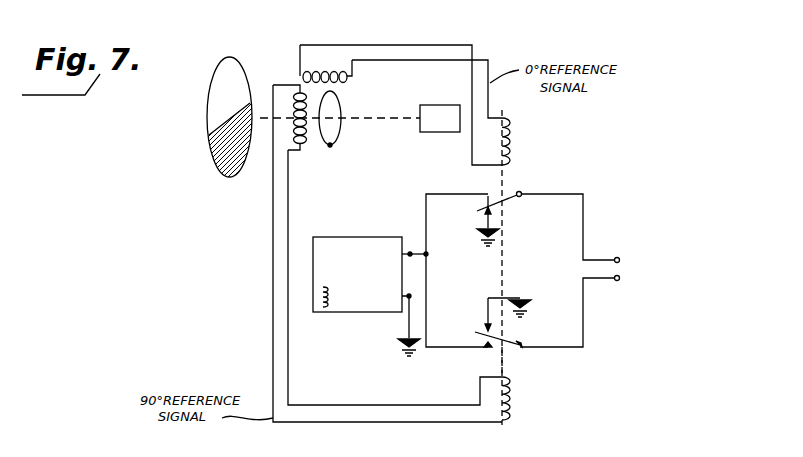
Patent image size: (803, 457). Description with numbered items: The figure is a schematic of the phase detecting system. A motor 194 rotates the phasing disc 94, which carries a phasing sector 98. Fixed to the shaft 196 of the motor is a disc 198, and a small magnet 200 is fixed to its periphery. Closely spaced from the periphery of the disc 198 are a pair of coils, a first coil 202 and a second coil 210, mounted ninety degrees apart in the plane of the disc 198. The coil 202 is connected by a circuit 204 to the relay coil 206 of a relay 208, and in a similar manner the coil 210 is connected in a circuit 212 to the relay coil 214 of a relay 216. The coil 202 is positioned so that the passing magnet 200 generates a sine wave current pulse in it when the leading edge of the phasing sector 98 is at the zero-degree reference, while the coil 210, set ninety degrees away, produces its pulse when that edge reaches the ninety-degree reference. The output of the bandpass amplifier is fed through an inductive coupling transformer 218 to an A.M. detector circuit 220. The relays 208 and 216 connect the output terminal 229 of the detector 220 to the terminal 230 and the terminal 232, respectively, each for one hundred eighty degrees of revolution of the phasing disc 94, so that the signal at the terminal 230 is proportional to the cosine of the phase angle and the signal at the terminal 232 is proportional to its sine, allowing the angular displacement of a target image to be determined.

The phasing disc 94 is at (238, 74).
The phasing sector 98 is at (218, 170).
The shaft 196 is at (262, 125).
The second coil 210 is at (305, 150).
The circuit 212 is at (289, 379).
The disc 198 is at (338, 105).
The small magnet 200 is at (330, 146).
The motor 194 is at (431, 132).
The coil 202 is at (326, 64).
The circuit 204 is at (428, 45).
The relay coil 206 is at (511, 142).
The relay 208 is at (505, 169).
The A.M. detector circuit 220 is at (347, 312).
The inductive coupling transformer 218 is at (331, 294).
The output terminal 229 is at (410, 250).
The terminal 230 is at (620, 258).
The terminal 232 is at (620, 278).
The relay coil 214 is at (511, 400).
The relay 216 is at (505, 372).